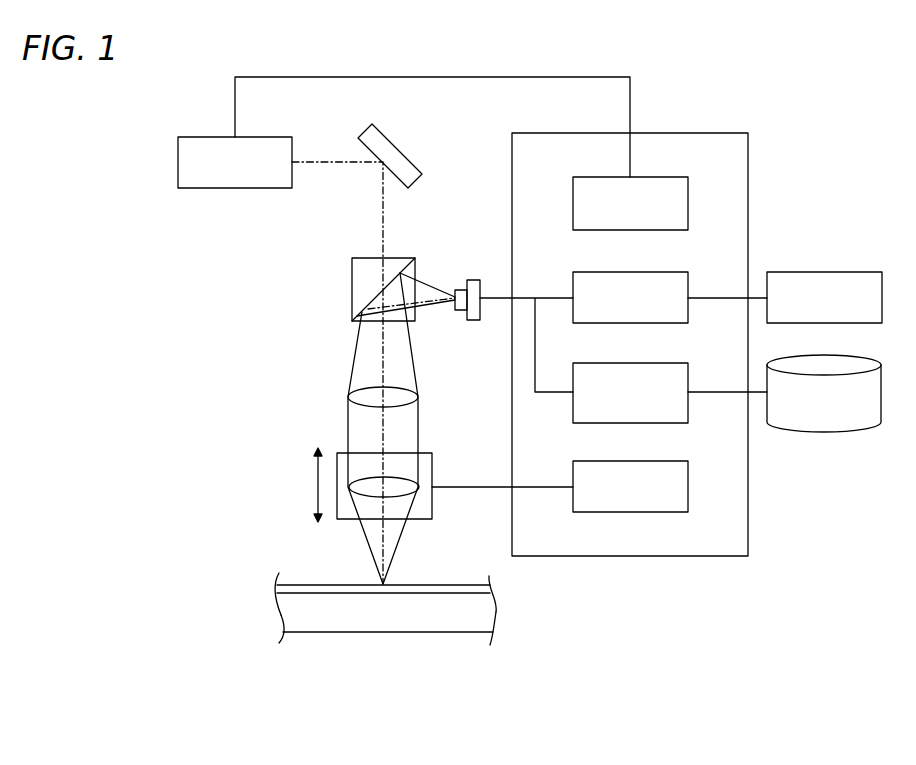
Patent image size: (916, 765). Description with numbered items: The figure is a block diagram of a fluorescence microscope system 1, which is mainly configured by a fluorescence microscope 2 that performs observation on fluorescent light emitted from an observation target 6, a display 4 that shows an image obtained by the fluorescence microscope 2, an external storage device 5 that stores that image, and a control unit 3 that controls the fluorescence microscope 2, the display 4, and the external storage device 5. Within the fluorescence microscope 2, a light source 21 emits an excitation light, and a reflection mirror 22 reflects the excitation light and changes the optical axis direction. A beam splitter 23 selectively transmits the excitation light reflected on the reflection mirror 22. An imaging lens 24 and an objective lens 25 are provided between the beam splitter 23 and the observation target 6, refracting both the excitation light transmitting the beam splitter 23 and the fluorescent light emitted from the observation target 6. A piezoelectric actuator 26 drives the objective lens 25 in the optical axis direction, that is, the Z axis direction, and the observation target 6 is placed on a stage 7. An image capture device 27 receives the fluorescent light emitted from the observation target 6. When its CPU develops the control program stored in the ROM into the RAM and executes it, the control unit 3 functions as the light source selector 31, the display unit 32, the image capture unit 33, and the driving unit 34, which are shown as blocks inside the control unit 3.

The fluorescence microscope system 1 is at (746, 39).
The fluorescence microscope 2 is at (265, 292).
The control unit 3 is at (698, 133).
The display 4 is at (827, 272).
The external storage device 5 is at (822, 430).
The observation target 6 is at (460, 585).
The stage 7 is at (459, 632).
The light source 21 is at (264, 137).
The reflection mirror 22 is at (400, 148).
The beam splitter 23 is at (401, 258).
The imaging lens 24 is at (417, 388).
The objective lens 25 is at (414, 480).
The piezoelectric actuator 26 is at (432, 505).
The image capture device 27 is at (463, 280).
The light source selector 31 is at (688, 200).
The display unit 32 is at (688, 283).
The image capture unit 33 is at (688, 377).
The driving unit 34 is at (688, 485).